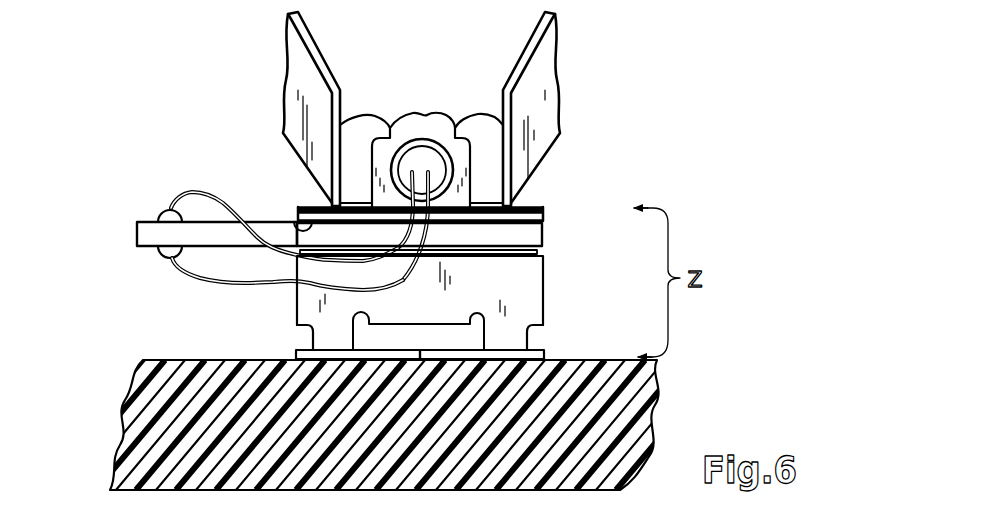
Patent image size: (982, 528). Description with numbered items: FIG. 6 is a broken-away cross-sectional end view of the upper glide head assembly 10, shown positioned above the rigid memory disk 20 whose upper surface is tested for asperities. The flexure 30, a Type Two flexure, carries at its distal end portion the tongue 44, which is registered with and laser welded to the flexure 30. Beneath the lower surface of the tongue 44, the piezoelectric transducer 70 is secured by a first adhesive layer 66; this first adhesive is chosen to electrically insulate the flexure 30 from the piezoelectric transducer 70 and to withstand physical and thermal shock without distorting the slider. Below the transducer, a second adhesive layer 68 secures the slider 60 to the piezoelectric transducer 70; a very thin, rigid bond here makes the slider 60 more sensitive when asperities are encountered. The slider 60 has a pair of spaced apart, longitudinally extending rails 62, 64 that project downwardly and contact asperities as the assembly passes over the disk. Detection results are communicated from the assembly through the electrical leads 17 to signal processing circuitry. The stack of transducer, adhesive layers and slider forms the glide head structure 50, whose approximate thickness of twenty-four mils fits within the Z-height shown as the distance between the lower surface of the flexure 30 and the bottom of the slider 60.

The upper glide head assembly 10 is at (603, 88).
The electrical leads 17 is at (175, 198).
The rigid memory disk 20 is at (150, 410).
The flexure 30 is at (297, 80).
The tongue 44 is at (537, 205).
The glide head structure 50 is at (122, 233).
The slider 60 is at (427, 308).
The rail 62 is at (332, 332).
The rail 64 is at (507, 337).
The first adhesive layer 66 is at (290, 218).
The second adhesive layer 68 is at (517, 253).
The piezoelectric transducer 70 is at (532, 235).